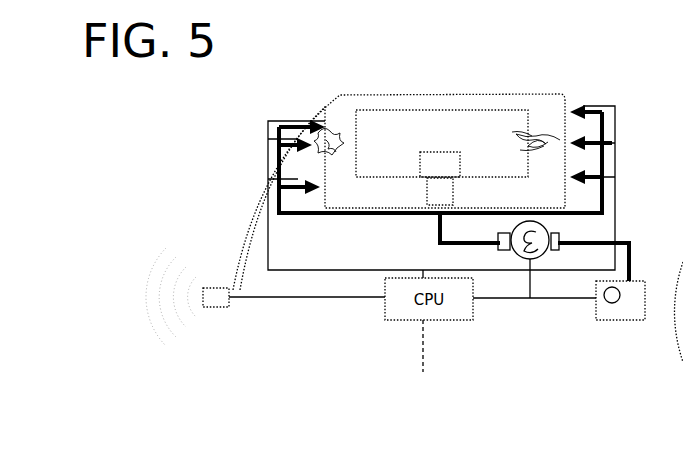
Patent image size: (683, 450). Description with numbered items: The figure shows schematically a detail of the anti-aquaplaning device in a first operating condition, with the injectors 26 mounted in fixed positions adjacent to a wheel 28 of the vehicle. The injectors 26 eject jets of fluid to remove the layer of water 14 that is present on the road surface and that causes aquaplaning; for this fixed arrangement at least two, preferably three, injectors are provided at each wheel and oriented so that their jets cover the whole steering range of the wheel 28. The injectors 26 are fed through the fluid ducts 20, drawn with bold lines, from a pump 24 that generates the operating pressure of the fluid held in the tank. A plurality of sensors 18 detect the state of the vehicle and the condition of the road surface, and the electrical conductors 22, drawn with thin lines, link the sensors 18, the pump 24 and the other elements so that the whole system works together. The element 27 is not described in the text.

The layer of water 14 is at (255, 0).
The sensors 18 is at (217, 300).
The fluid ducts 20 is at (607, 0).
The electrical conductors 22 is at (294, 270).
The pump 24 is at (556, 232).
The injectors 26 is at (285, 150).
The control console 27 is at (427, 197).
The wheel 28 is at (432, 127).